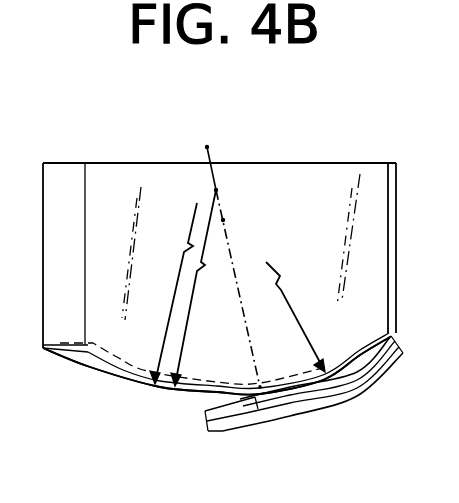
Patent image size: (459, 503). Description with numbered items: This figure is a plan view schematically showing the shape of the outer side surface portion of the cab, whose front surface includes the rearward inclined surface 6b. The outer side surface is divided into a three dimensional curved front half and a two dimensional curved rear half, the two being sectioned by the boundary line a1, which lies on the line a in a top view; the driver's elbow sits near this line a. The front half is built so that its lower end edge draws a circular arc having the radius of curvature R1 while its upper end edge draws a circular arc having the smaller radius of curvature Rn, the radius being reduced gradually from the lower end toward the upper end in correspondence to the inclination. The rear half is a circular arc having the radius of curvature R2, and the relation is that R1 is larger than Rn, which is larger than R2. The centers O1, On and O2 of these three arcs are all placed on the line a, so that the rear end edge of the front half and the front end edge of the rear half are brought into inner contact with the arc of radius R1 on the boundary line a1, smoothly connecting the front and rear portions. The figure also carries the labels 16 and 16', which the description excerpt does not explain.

The inclined surface 6b is at (83, 257).
The reflecting strip / sheet member 16 is at (278, 397).
The reflecting strip (alternative position) 16' is at (216, 406).
The line a is at (209, 150).
The boundary line a1 is at (273, 378).
The center of circular arc of radius R1 O1 is at (212, 133).
The center of circular arc of radius Rn On is at (233, 191).
The center of circular arc of radius R2 O2 is at (239, 288).
The radius of curvature of lower end R1 is at (173, 293).
The radius of curvature of upper end Rn is at (199, 288).
The radius of curvature of rear half portion R2 is at (295, 308).